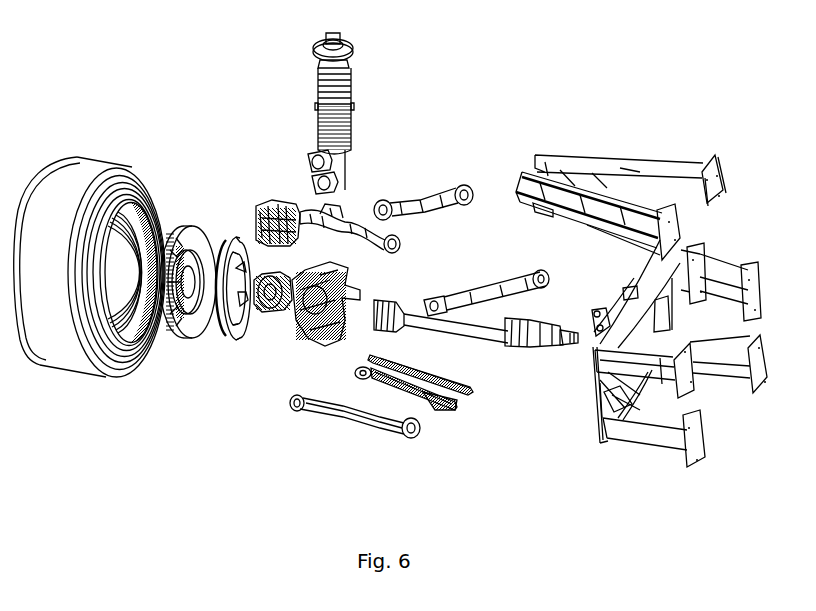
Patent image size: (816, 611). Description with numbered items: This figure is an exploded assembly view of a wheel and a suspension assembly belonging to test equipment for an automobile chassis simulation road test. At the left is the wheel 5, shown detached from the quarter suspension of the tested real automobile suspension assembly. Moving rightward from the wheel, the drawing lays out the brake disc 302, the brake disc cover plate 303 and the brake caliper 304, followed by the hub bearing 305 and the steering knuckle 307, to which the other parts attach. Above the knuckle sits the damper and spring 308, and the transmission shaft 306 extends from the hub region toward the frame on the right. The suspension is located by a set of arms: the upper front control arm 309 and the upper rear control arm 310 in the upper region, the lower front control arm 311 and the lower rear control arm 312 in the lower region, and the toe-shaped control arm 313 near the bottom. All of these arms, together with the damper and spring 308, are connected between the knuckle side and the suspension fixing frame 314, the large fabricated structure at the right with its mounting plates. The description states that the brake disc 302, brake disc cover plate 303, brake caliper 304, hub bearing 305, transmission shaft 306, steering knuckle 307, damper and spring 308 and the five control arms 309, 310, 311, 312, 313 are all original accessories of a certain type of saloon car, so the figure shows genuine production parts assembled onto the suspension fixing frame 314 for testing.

The wheel tire 5 is at (60, 241).
The brake disc 302 is at (197, 233).
The brake disc cover plate 303 is at (231, 236).
The brake caliper 304 is at (274, 200).
The hub bearing 305 is at (261, 316).
The transmission shaft 306 is at (504, 336).
The steering knuckle 307 is at (318, 333).
The damper and spring 308 is at (418, 123).
The upper front control arm 309 is at (438, 197).
The upper rear control arm 310 is at (378, 221).
The lower front control arm 311 is at (489, 298).
The lower rear control arm 312 is at (422, 402).
The toe-shaped control arm 313 is at (345, 421).
The suspension fixing frame 314 is at (663, 170).